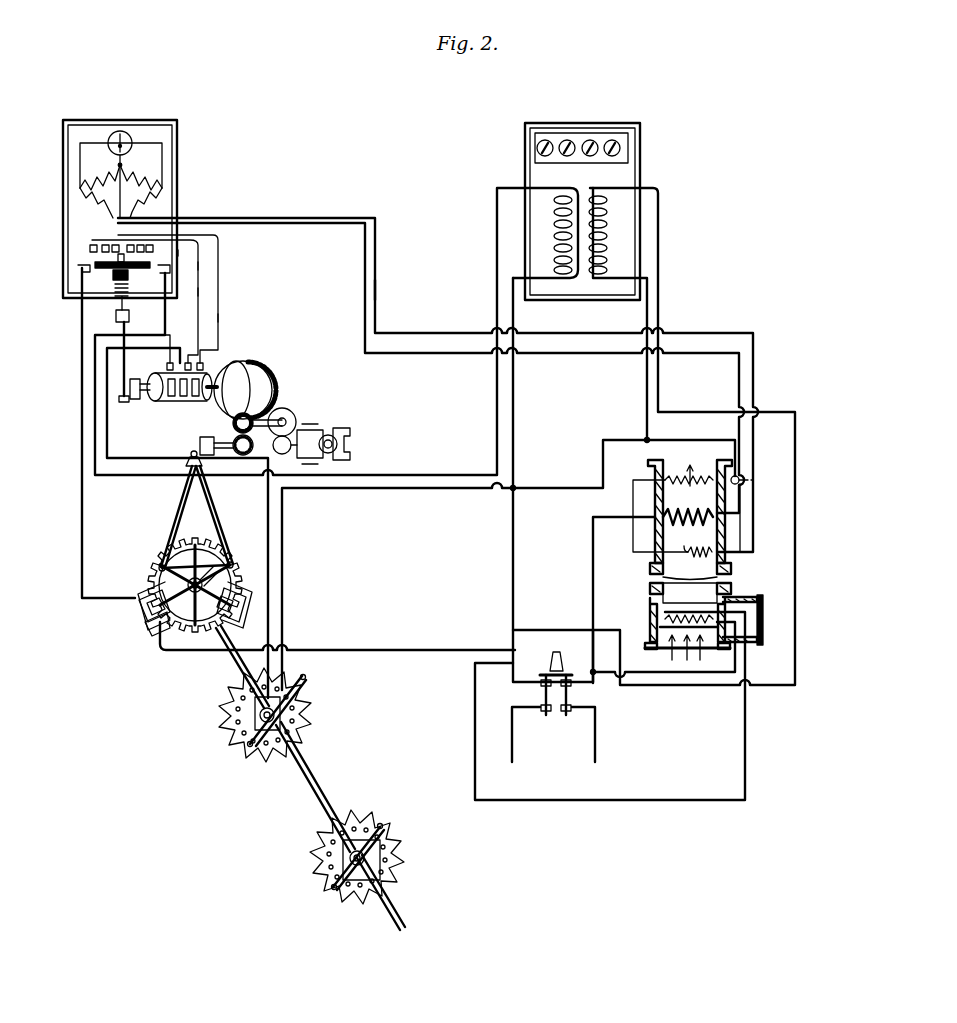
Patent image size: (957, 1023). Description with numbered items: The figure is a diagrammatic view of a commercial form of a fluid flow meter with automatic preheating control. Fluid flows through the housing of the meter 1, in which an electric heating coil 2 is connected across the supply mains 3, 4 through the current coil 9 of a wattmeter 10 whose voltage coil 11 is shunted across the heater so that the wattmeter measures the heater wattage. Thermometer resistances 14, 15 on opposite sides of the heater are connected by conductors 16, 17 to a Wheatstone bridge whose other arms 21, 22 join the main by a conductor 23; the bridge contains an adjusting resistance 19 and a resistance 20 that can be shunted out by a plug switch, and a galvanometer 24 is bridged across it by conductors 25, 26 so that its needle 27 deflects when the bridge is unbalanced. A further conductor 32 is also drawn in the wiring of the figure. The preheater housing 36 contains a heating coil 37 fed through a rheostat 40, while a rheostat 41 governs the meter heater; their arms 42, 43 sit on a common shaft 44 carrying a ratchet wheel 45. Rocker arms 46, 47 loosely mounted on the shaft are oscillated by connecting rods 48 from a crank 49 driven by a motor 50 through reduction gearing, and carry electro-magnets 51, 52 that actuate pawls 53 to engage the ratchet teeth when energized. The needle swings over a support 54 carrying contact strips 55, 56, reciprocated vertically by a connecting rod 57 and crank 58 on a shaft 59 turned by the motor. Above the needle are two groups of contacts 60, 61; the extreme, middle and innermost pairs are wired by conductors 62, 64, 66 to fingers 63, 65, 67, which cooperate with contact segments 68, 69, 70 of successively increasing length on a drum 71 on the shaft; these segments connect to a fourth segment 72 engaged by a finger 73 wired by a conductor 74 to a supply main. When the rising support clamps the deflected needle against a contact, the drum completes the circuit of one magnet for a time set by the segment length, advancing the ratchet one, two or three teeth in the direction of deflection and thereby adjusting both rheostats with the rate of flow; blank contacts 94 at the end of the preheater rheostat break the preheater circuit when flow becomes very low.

The housing of the meter 1 is at (726, 533).
The electric heating coil 2 is at (726, 508).
The supply main 3 is at (514, 746).
The supply main 4 is at (596, 746).
The current coil 9 is at (558, 231).
The wattmeter 10 is at (630, 168).
The voltage coil 11 is at (612, 231).
The thermometer resistance 14 is at (712, 550).
The thermometer resistance 15 is at (700, 478).
The conductor 16 is at (377, 243).
The conductor 17 is at (367, 262).
The adjusting resistance 19 is at (146, 216).
The resistance 20 is at (84, 202).
The arm of the Wheatstone bridge 21 is at (165, 186).
The arm of the Wheatstone bridge 22 is at (96, 168).
The conductor 23 is at (376, 290).
The galvanometer 24 is at (127, 137).
The conductor 25 is at (89, 137).
The conductor 26 is at (163, 154).
The needle 27 is at (134, 150).
The conductor 32 is at (418, 650).
The housing for the preheater 36 is at (652, 600).
The electric heating coil 37 is at (710, 635).
The rheostat 40 is at (402, 856).
The rheostat 41 is at (293, 685).
The rheostat arm 42 is at (382, 841).
The arm 43 is at (303, 690).
The shaft 44 is at (310, 772).
The ratchet wheel 45 is at (238, 566).
The rocker arm 46 is at (162, 567).
The rocker arm 47 is at (210, 556).
The connecting rods 48 is at (186, 488).
The crank 49 is at (200, 447).
The motor 50 is at (320, 436).
The electro-magnet 51 is at (146, 633).
The electro-magnet 52 is at (256, 599).
The pawls 53 is at (258, 613).
The support 54 is at (82, 297).
The contact strip 55 is at (112, 268).
The contact strip 56 is at (178, 253).
The connecting rod 57 is at (116, 317).
The crank 58 is at (122, 386).
The shaft 59 is at (152, 392).
The contacts 60 is at (89, 249).
The contacts 61 is at (140, 246).
The conductor 62 is at (199, 292).
The finger 63 is at (190, 360).
The conductor 64 is at (219, 318).
The finger 65 is at (203, 362).
The conductor 66 is at (199, 268).
The finger 67 is at (256, 366).
The contact segment 68 is at (183, 398).
The contact segment 69 is at (195, 398).
The contact segment 70 is at (233, 418).
The drum 71 is at (160, 378).
The contact segment 72 is at (170, 398).
The finger 73 is at (172, 360).
The conductor 74 is at (106, 457).
The blank contacts 94 is at (346, 828).